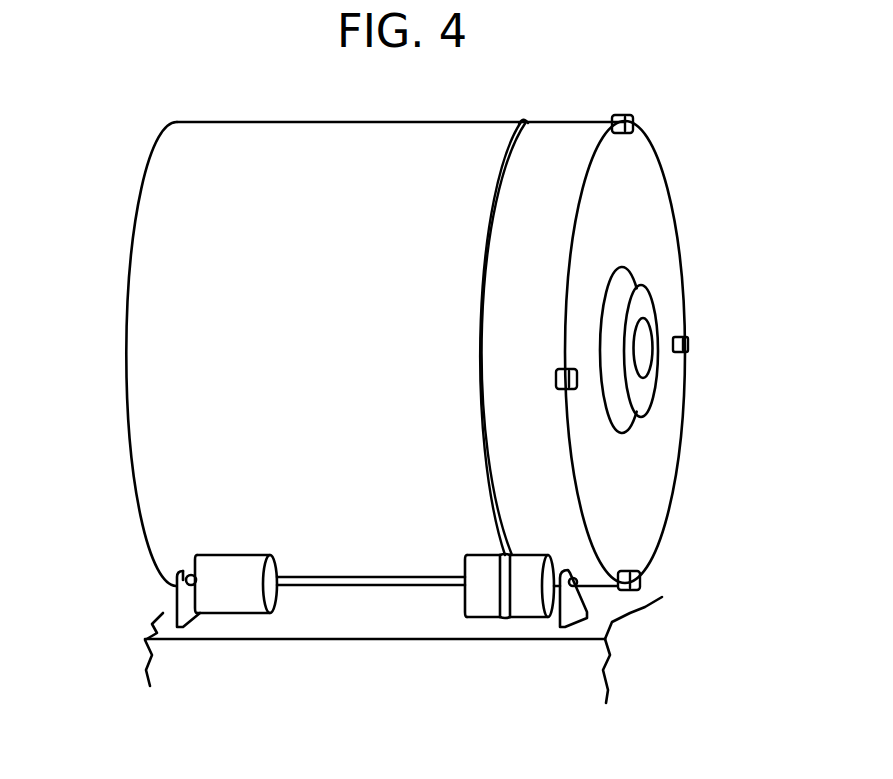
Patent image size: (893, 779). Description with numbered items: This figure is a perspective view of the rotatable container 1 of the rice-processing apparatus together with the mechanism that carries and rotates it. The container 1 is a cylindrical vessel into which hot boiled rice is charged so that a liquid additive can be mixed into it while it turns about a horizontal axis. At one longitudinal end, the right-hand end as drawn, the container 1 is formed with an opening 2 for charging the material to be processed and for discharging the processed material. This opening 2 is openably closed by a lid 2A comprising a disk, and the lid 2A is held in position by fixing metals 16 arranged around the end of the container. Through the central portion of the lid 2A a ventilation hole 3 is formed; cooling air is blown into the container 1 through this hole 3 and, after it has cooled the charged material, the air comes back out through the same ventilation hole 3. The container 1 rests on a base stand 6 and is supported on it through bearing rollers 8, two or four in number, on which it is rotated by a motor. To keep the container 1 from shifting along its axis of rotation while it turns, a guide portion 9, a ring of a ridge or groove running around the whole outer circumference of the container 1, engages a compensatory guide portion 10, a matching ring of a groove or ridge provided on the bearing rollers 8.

The rotatable container 1 is at (152, 452).
The opening 2 is at (672, 493).
The lid 2A is at (652, 207).
The ventilation hole 3 is at (643, 330).
The base stand 6 is at (293, 655).
The bearing rollers 8 is at (218, 594).
The guide portion 9 is at (483, 500).
The compensatory guide portion 10 is at (500, 617).
The fixing metals 16 is at (688, 346).